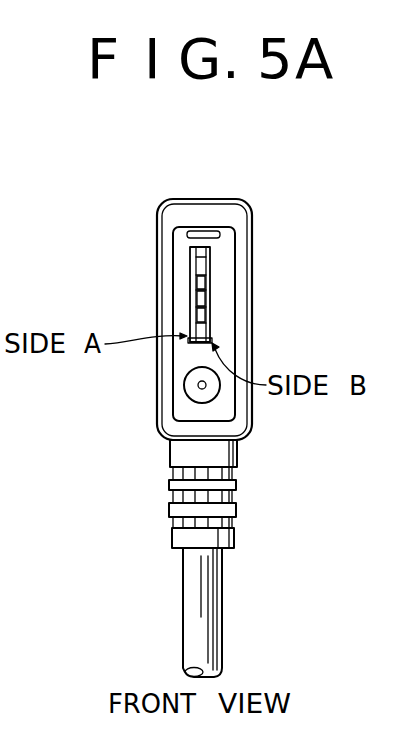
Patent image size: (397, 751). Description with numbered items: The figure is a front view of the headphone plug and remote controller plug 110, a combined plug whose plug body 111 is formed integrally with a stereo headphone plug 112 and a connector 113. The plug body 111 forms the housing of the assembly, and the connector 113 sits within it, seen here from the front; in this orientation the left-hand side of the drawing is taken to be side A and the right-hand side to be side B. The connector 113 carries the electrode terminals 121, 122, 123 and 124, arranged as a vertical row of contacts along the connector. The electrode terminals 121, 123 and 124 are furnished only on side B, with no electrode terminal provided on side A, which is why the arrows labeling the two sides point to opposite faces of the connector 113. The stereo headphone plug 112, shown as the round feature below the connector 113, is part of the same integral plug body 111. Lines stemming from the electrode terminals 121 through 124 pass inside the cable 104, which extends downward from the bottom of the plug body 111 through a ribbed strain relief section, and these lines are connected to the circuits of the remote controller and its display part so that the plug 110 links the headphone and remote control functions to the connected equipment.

The headphone plug and remote controller plug 110 is at (173, 193).
The plug body 111 is at (249, 203).
The stereo headphone plug 112 is at (222, 398).
The connector 113 is at (207, 247).
The electrode terminal 121 is at (210, 258).
The electrode terminal 122 is at (210, 278).
The electrode terminal 123 is at (210, 303).
The electrode terminal 124 is at (210, 331).
The cable 104 is at (222, 595).